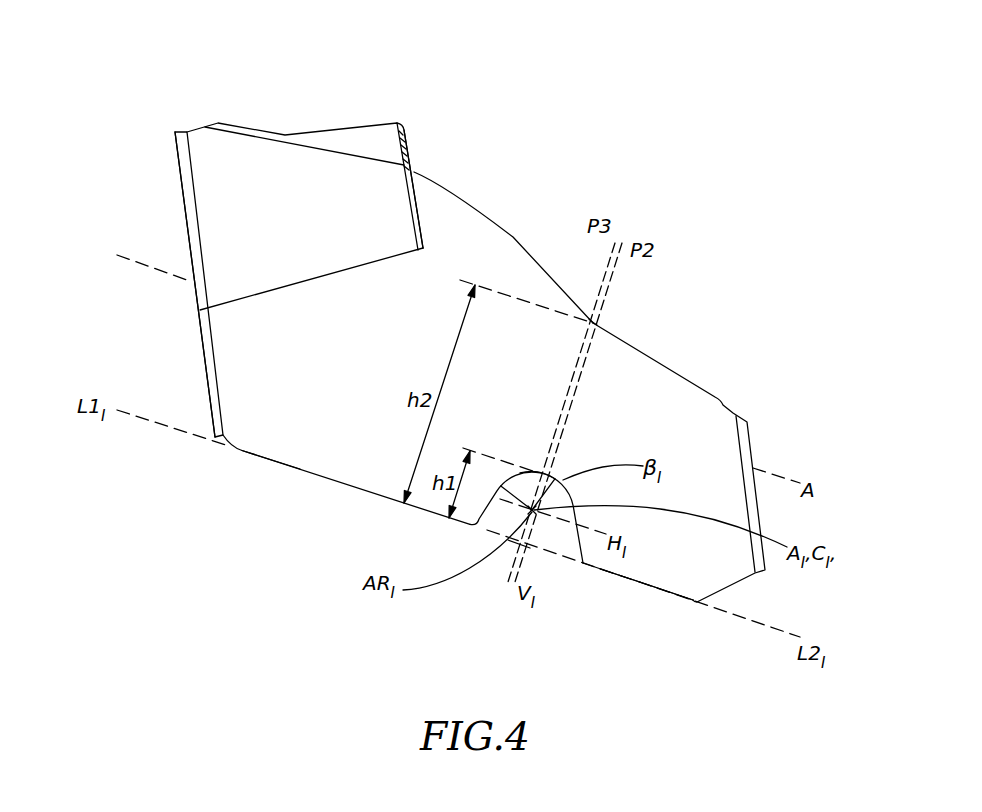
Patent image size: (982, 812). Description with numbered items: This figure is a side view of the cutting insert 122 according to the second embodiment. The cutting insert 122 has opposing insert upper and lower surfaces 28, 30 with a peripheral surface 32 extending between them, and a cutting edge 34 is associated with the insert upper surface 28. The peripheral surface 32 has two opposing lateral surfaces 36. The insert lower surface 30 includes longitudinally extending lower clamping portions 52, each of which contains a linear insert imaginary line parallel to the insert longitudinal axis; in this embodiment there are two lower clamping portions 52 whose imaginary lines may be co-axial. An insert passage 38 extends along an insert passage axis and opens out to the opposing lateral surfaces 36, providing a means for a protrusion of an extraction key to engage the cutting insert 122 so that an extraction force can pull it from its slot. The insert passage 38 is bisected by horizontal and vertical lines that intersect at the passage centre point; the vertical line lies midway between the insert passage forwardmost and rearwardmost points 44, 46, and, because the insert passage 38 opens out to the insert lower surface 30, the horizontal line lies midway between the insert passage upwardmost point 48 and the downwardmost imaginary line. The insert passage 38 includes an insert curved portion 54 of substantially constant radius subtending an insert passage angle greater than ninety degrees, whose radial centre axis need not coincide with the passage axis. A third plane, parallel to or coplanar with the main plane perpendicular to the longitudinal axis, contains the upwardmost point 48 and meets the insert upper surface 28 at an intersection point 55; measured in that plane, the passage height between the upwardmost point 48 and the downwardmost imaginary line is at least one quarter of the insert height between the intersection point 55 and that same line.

The cutting insert 122 is at (272, 72).
The cutting edge 34 is at (175, 130).
The lateral surfaces 36 is at (450, 223).
The insert upper surface 28 is at (498, 208).
The intersection point 55 is at (593, 320).
The peripheral surface 32 is at (623, 388).
The insert passage rearwardmost point 46 is at (583, 567).
The insert passage upwardmost point 48 is at (543, 473).
The insert curved portion 54 is at (563, 472).
The insert passage forwardmost point 44 is at (478, 527).
The lower clamping portion 52 is at (267, 459).
The insert passage 38 is at (493, 588).
The insert lower surface 30 is at (618, 608).